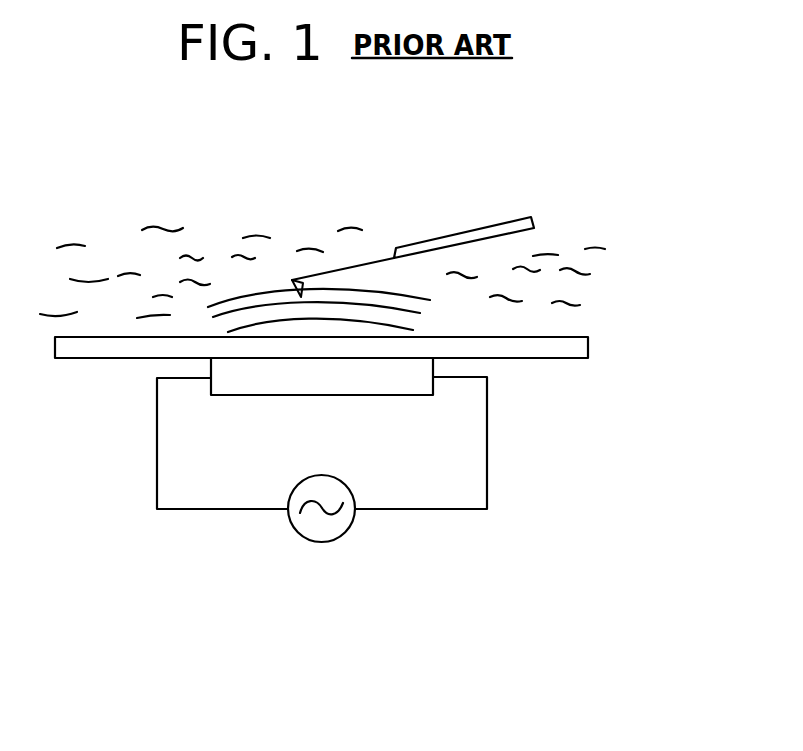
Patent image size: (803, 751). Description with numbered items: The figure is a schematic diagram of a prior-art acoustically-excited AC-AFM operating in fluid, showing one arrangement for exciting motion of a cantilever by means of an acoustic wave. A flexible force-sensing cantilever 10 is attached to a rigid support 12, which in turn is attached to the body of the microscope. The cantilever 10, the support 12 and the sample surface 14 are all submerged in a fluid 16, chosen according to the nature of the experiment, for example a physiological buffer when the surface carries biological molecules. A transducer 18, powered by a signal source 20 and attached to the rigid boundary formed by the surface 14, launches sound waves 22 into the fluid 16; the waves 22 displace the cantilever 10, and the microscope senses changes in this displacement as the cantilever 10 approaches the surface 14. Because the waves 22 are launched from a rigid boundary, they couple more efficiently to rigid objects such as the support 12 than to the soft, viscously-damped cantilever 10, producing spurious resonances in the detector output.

The force-sensing cantilever 10 is at (360, 265).
The rigid support 12 is at (513, 213).
The sample surface 14 is at (573, 336).
The fluid 16 is at (580, 270).
The transducer 18 is at (260, 378).
The signal source 20 is at (328, 543).
The sound waves 22 is at (432, 285).